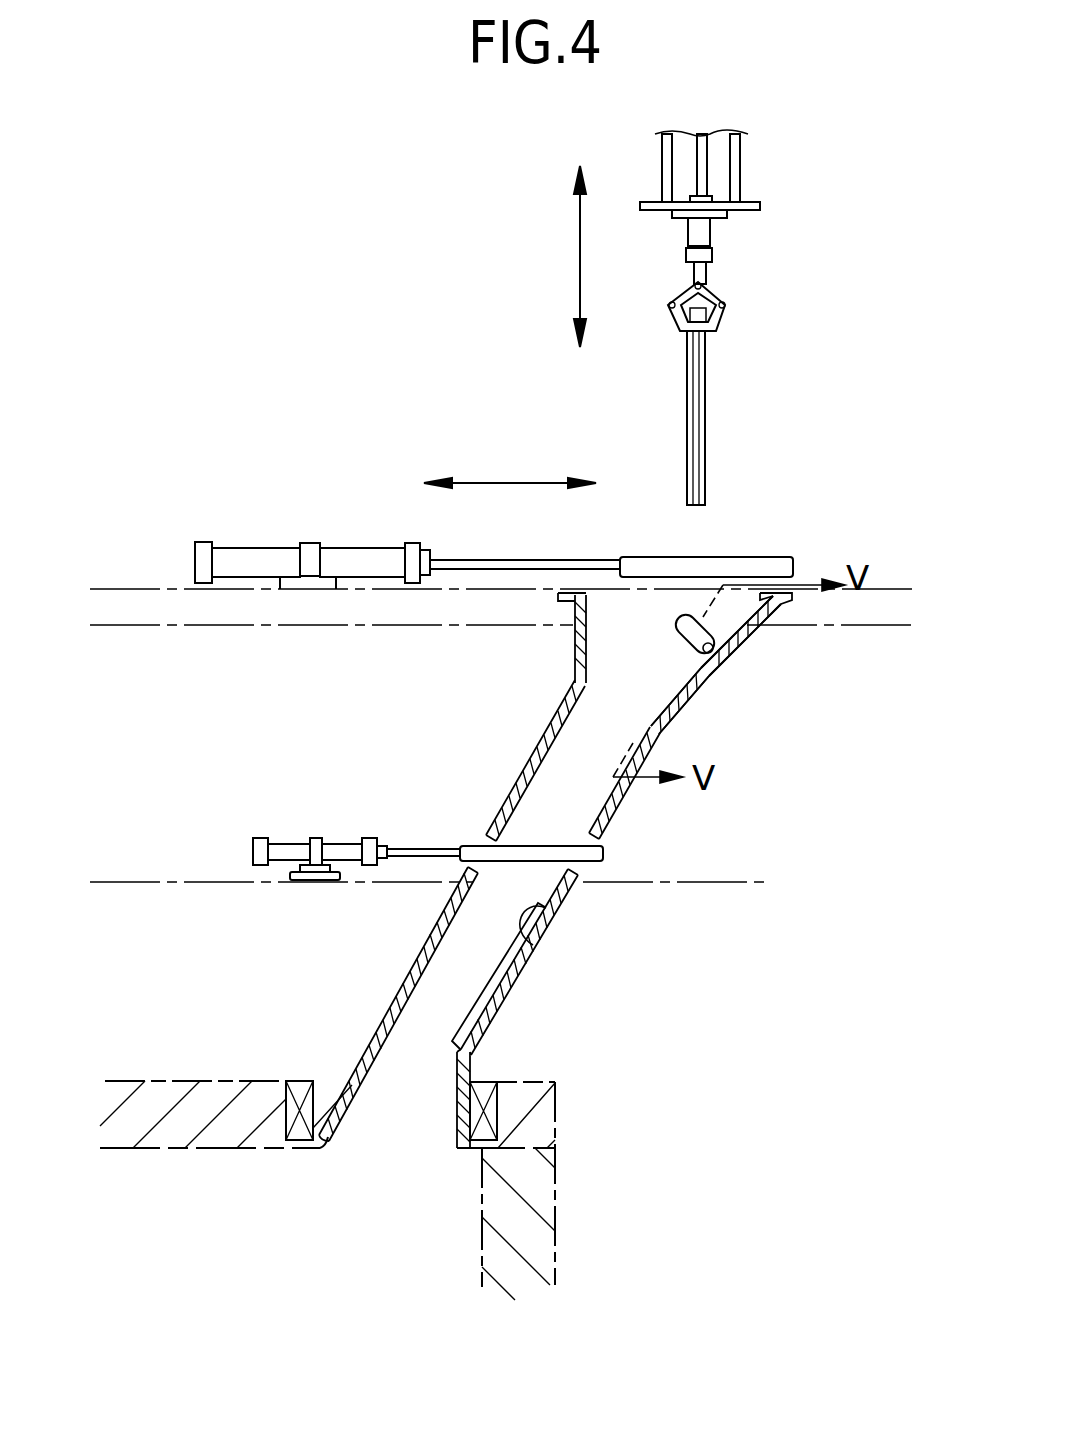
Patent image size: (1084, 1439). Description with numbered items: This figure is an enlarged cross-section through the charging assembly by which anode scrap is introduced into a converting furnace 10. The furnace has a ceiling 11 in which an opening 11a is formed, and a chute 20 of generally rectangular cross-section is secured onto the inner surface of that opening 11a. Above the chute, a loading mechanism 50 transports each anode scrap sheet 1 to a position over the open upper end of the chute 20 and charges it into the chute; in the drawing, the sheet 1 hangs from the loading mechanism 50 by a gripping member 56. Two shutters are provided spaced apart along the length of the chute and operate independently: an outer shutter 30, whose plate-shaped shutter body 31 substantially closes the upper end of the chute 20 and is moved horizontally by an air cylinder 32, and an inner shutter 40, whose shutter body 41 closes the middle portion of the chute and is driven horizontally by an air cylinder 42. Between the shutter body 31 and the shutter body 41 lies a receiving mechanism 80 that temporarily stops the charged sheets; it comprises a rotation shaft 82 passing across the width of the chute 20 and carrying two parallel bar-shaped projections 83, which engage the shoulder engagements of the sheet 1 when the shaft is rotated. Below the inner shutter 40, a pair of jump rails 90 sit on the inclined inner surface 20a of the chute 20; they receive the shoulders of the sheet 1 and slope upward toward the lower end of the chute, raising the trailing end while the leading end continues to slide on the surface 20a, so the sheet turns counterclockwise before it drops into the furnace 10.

The anode scrap sheet 1 is at (687, 446).
The converting furnace 10 is at (556, 1240).
The ceiling 11 is at (327, 1122).
The opening 11a is at (322, 1146).
The chute 20 is at (617, 812).
The inclined inner surface 20a is at (544, 915).
The outer shutter 30 is at (496, 491).
The shutter body 31 is at (760, 557).
The air cylinder 32 is at (259, 550).
The inner shutter 40 is at (428, 787).
The shutter body 41 is at (474, 846).
The air cylinder 42 is at (343, 845).
The loading mechanism 50 is at (770, 167).
The gripper shaft 56 is at (711, 234).
The receiving mechanism 80 is at (741, 636).
The rotation shaft 82 is at (714, 660).
The bar-shaped projections 83 is at (716, 641).
The jump rails 90 is at (508, 953).